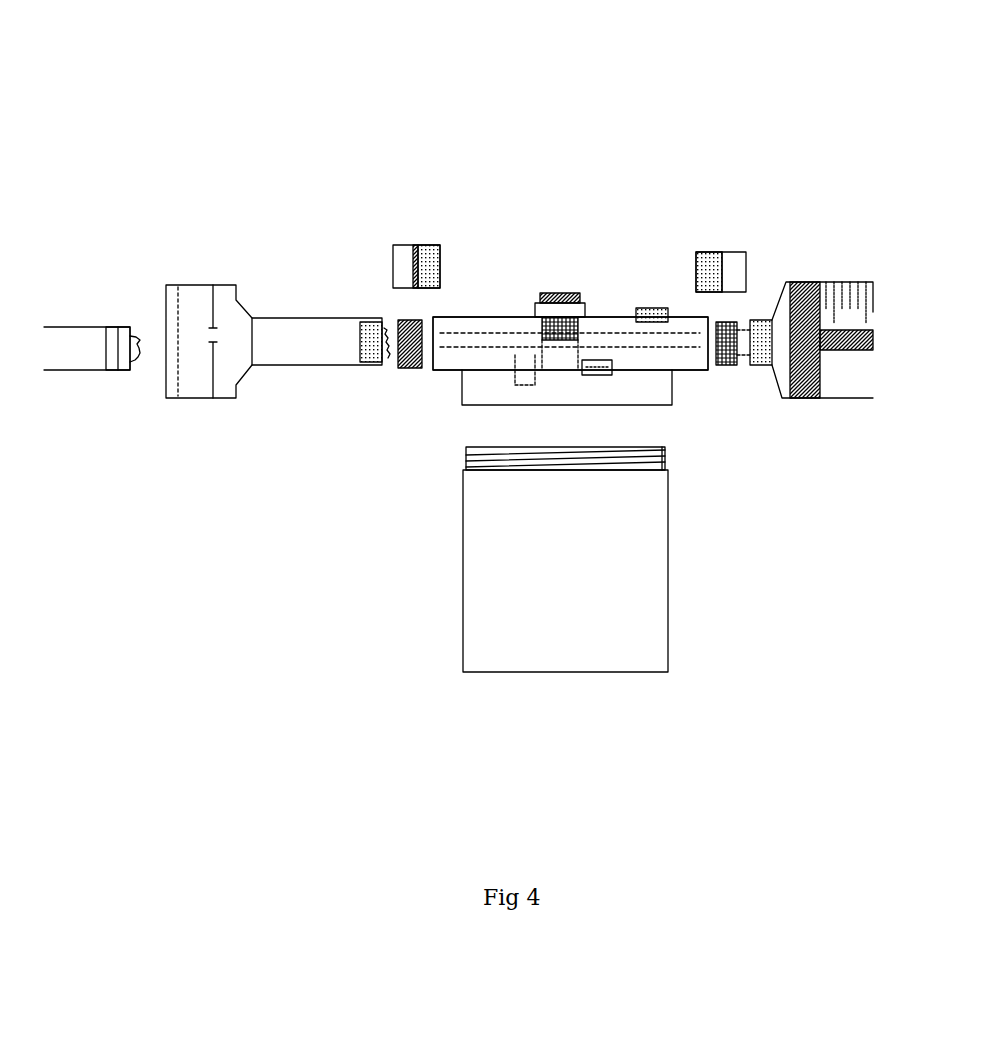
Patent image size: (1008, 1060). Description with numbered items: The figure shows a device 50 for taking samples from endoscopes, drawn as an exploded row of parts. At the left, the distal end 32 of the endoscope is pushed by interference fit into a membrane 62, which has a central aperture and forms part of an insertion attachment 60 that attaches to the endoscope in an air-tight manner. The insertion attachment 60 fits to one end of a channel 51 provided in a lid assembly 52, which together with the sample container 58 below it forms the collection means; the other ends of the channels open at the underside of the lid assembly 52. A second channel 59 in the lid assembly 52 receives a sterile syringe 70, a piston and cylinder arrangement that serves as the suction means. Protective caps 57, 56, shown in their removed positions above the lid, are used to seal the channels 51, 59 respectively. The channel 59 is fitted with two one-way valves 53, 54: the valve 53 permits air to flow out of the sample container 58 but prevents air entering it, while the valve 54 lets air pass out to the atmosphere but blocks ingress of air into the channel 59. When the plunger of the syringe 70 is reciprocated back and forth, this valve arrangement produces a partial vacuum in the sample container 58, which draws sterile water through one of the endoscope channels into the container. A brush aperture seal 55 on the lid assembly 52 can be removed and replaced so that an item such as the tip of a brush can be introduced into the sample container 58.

The distal end 32 is at (119, 327).
The device 50 is at (397, 103).
The channel 51 is at (470, 342).
The lid assembly 52 is at (672, 391).
The one-way valve 53 is at (597, 365).
The one-way valve 54 is at (642, 310).
The brush aperture seal 55 is at (560, 297).
The protective cap 56 is at (735, 250).
The protective cap 57 is at (425, 247).
The sample container 58 is at (672, 517).
The channel 59 is at (638, 340).
The insertion attachment 60 is at (328, 363).
The membrane 62 is at (213, 362).
The sterile syringe 70 is at (835, 280).